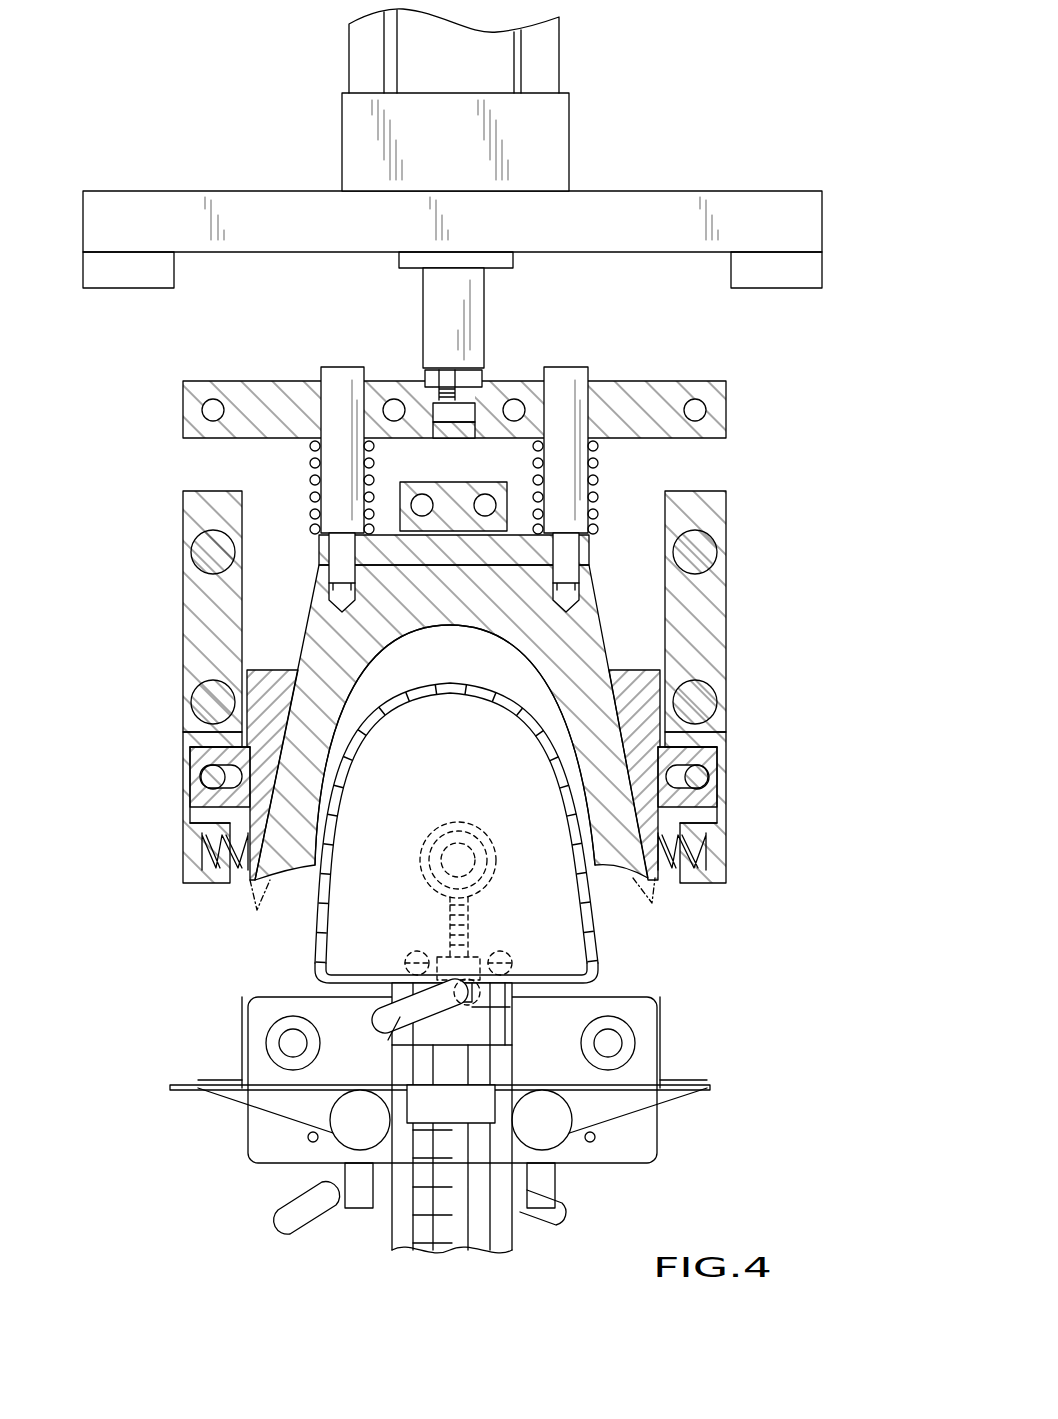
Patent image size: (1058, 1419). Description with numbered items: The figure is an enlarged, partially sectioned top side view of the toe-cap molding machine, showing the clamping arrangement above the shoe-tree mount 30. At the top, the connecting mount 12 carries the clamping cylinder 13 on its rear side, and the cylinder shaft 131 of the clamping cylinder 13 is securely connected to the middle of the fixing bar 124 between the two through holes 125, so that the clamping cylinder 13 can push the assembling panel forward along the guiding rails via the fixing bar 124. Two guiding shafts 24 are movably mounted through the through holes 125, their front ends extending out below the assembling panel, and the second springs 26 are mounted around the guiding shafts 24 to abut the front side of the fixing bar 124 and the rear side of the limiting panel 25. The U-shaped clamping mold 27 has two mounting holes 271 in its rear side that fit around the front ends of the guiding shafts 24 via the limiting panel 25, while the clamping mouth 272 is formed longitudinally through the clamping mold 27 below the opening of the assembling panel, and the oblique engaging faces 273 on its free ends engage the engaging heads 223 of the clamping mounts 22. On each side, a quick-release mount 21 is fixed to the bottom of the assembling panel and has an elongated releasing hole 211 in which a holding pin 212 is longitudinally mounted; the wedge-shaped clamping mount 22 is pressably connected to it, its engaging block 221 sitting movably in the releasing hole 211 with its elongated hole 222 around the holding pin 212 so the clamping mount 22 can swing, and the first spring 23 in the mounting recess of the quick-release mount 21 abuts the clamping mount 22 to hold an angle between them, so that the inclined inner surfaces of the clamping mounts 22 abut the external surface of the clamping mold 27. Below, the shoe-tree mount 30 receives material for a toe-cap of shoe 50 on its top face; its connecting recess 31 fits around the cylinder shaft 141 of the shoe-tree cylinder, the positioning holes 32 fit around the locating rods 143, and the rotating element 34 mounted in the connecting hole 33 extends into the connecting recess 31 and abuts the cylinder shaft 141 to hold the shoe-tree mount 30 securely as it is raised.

The connecting mount 12 is at (683, 178).
The clamping cylinder 13 is at (312, 102).
The cylinder shaft 131 is at (437, 313).
The fixing bar 124 is at (710, 397).
The through holes 125 is at (575, 385).
The guiding shafts 24 is at (327, 370).
The limiting panel 25 is at (592, 545).
The second springs 26 is at (312, 452).
The clamping mold 27 is at (307, 605).
The mounting holes 271 is at (560, 607).
The clamping mouth 272 is at (492, 636).
The engaging faces 273 is at (305, 870).
The quick-release mount 21 is at (727, 585).
The clamping mount 22 is at (658, 688).
The engaging block 221 is at (708, 793).
The elongated hole 222 is at (714, 760).
The engaging head 223 is at (652, 903).
The releasing hole 211 is at (715, 822).
The holding pin 212 is at (700, 775).
The first spring 23 is at (695, 858).
The toe-cap of shoe 50 is at (318, 945).
The connecting recess 31 is at (440, 840).
The cylinder shaft 141 is at (478, 873).
The locating rod 143 is at (418, 950).
The positioning hole 32 is at (505, 955).
The connecting hole 33 is at (470, 1005).
The rotating element 34 is at (400, 1018).
The shoe-tree mount 30 is at (603, 975).